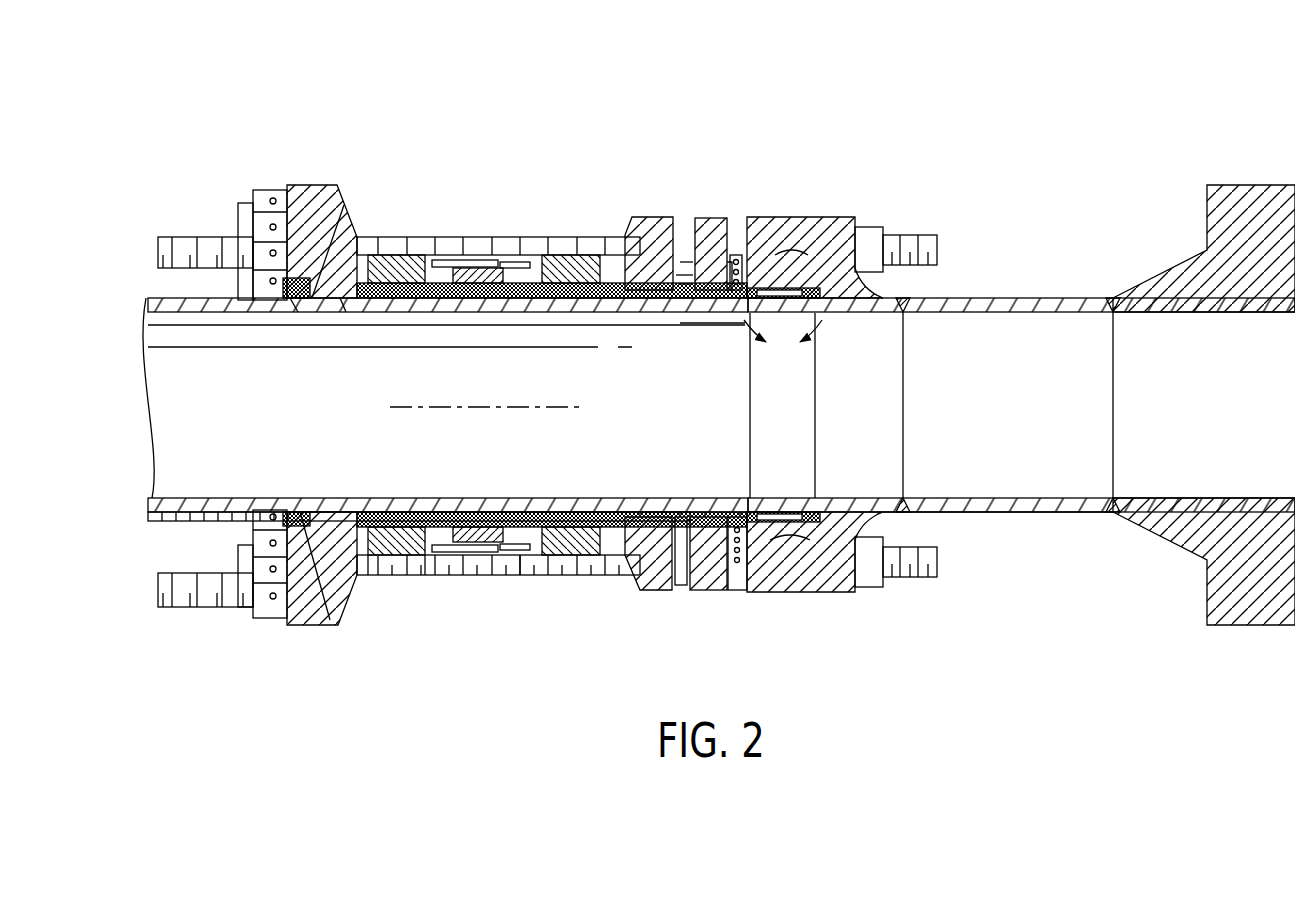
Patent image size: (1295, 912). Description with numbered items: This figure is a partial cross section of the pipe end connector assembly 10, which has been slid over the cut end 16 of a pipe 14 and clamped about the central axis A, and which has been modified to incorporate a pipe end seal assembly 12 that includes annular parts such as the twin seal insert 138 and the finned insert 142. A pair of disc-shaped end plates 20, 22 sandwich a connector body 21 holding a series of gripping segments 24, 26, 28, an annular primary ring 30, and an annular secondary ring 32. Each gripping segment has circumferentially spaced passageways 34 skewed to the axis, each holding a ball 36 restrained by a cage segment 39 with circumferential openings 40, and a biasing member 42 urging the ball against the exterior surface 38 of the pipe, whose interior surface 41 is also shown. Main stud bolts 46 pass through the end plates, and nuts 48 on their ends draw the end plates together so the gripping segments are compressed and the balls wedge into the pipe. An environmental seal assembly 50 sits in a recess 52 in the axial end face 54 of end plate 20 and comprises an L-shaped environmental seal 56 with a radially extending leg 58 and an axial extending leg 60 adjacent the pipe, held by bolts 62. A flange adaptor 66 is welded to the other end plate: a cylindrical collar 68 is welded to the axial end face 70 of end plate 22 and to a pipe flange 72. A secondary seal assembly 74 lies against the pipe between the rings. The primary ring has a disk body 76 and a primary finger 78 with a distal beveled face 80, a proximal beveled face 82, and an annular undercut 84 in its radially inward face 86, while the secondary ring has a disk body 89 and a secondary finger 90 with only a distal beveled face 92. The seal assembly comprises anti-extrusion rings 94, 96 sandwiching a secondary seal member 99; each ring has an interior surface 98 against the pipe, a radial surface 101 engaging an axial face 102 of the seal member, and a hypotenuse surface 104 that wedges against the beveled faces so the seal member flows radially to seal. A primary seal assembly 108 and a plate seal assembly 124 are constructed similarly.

The pipe end connector assembly 10 is at (766, 70).
The pipe end seal assembly 12 is at (700, 367).
The pipe 14 is at (168, 498).
The cut end 16 is at (745, 500).
The end plate 20 is at (300, 185).
The connector body 21 is at (480, 168).
The end plate 22 is at (832, 217).
The gripping segment 24 is at (404, 258).
The gripping segment 26 is at (480, 262).
The gripping segment 28 is at (585, 255).
The primary ring 30 is at (720, 282).
The secondary ring 32 is at (652, 216).
The passageway 34 is at (420, 556).
The ball 36 is at (370, 560).
The exterior surface 38 is at (150, 297).
The cage segment 39 is at (395, 515).
The circumferential opening 40 is at (425, 512).
The interior surface 41 is at (210, 512).
The biasing member 42 is at (452, 512).
The main stud bolt 46 is at (540, 576).
The nut 48 is at (870, 236).
The environmental seal assembly 50 is at (300, 312).
The recess 52 is at (292, 548).
The axial end face 54 is at (282, 192).
The environmental seal 56 is at (345, 314).
The radially extending leg 58 is at (332, 186).
The axial extending leg 60 is at (328, 312).
The bolt 62 is at (298, 512).
The flange adaptor 66 is at (1040, 236).
The cylindrical collar 68 is at (1020, 512).
The axial end face 70 is at (910, 500).
The pipe flange 72 is at (1245, 185).
The secondary seal assembly 74 is at (700, 314).
The disk body 76 is at (738, 282).
The primary finger 78 is at (790, 230).
The distal beveled face 80 is at (750, 500).
The proximal beveled face 82 is at (688, 514).
The annular undercut 84 is at (718, 586).
The radially inward face 86 is at (708, 514).
The disk body 89 is at (640, 230).
The secondary finger 90 is at (650, 512).
The distal beveled face 92 is at (712, 284).
The anti-extrusion ring 94 is at (643, 590).
The anti-extrusion ring 96 is at (748, 582).
The interior surface 98 is at (712, 313).
The secondary seal member 99 is at (706, 286).
The radial surface 101 is at (698, 286).
The axial face 102 is at (683, 572).
The hypotenuse surface 104 is at (742, 313).
The primary seal assembly 108 is at (756, 498).
The plate seal assembly 124 is at (813, 498).
The twin seal insert 138 is at (790, 548).
The finned insert 142 is at (822, 380).
The central axis A is at (477, 406).